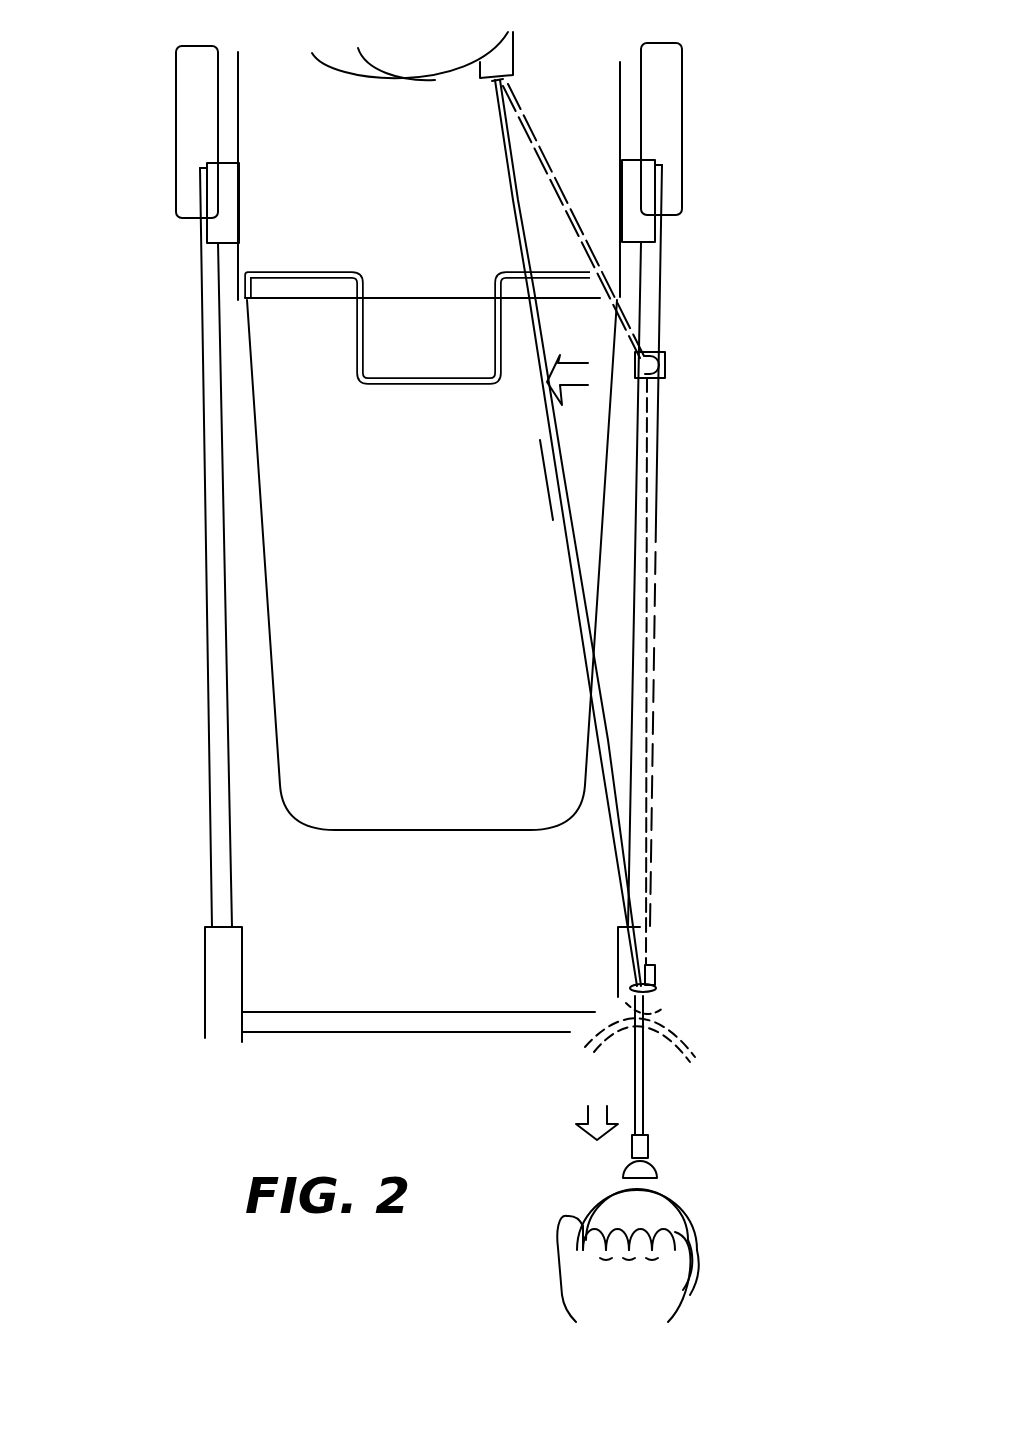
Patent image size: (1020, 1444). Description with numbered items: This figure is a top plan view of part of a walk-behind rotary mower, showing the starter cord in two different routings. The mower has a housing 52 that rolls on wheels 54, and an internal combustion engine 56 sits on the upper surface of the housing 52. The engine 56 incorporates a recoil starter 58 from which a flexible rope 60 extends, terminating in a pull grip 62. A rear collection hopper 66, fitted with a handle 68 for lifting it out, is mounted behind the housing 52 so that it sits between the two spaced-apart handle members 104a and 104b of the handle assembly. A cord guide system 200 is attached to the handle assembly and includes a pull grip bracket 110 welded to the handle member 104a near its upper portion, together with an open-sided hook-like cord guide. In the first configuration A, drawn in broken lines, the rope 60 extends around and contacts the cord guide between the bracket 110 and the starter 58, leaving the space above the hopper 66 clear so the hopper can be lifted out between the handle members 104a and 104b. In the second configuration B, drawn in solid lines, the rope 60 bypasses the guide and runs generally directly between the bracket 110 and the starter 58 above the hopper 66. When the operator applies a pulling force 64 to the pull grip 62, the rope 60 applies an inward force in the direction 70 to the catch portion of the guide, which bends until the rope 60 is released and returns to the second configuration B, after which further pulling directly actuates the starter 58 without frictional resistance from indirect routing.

The housing 52 is at (238, 112).
The wheels 54 is at (176, 186).
The internal combustion engine 56 is at (518, 60).
The recoil starter 58 is at (492, 82).
The first configuration A is at (533, 137).
The second configuration B is at (553, 482).
The rope 60 is at (612, 830).
The pull grip 62 is at (690, 1038).
The pulling force 64 is at (578, 1114).
The collection hopper 66 is at (362, 832).
The handle 68 is at (412, 384).
The inward force direction 70 is at (588, 363).
The handle member 104a is at (666, 433).
The handle member 104b is at (205, 520).
The pull grip bracket 110 is at (657, 988).
The cord guide system 200 is at (678, 362).